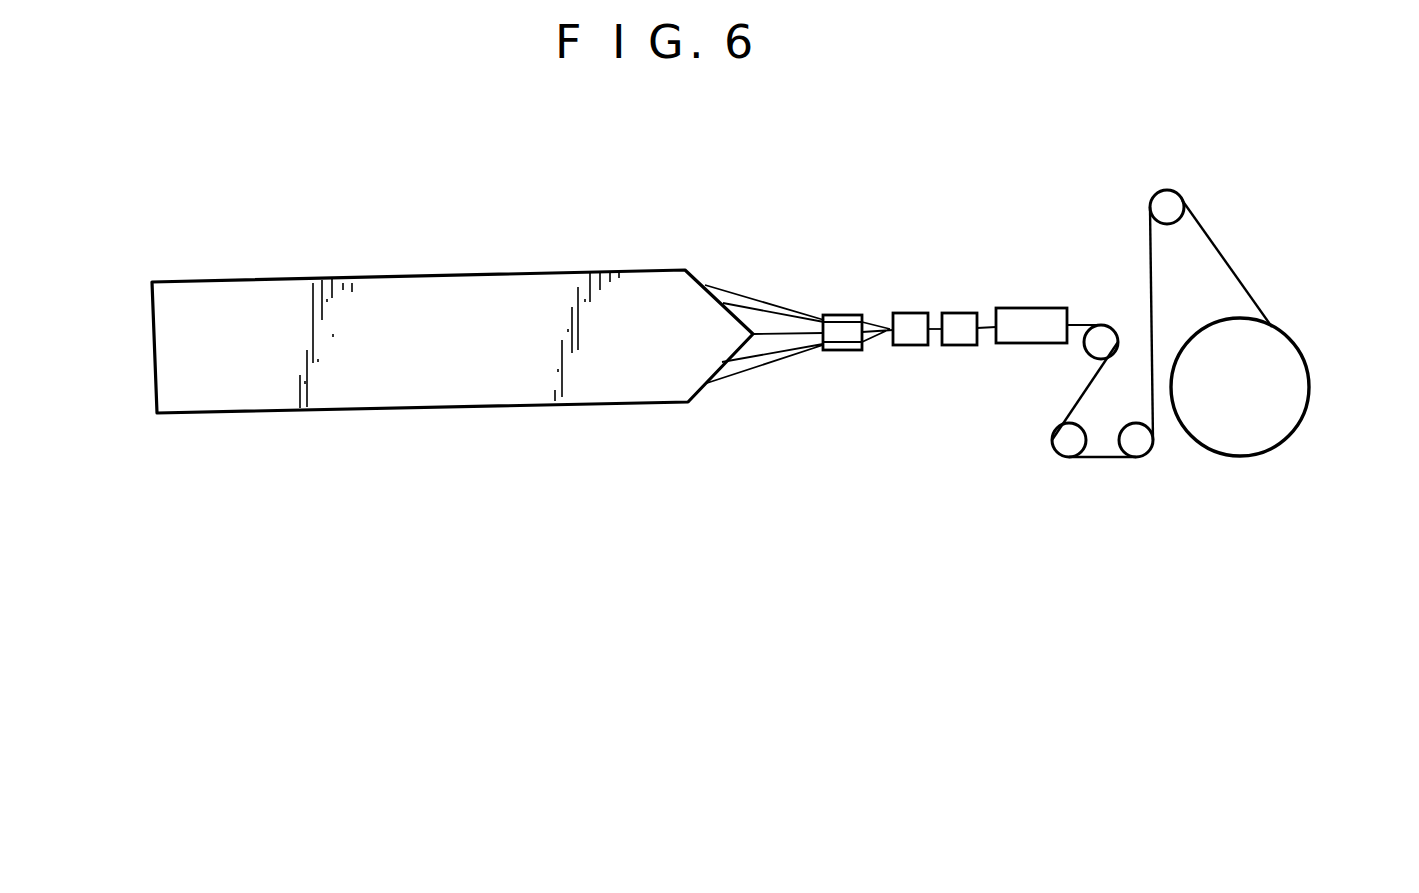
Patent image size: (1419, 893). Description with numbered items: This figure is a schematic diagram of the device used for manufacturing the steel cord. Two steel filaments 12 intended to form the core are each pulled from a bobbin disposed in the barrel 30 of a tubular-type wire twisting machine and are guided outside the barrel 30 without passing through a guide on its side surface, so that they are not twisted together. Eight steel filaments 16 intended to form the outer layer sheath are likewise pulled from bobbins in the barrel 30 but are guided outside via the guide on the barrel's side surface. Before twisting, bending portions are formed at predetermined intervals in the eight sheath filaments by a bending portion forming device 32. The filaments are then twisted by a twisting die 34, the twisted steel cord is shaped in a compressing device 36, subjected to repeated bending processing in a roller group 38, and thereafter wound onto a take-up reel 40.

The barrel 30 is at (440, 295).
The steel filaments 12 is at (770, 335).
The steel filaments 16 is at (766, 367).
The bending portion forming device 32 is at (840, 328).
The twisting die 34 is at (907, 318).
The compressing device 36 is at (955, 317).
The roller group 38 is at (1030, 315).
The take-up reel 40 is at (1283, 388).